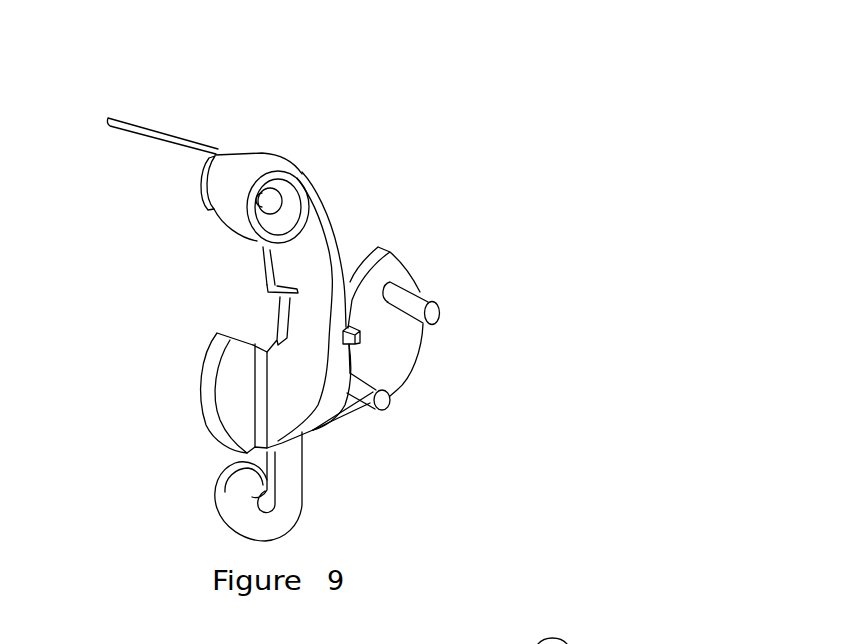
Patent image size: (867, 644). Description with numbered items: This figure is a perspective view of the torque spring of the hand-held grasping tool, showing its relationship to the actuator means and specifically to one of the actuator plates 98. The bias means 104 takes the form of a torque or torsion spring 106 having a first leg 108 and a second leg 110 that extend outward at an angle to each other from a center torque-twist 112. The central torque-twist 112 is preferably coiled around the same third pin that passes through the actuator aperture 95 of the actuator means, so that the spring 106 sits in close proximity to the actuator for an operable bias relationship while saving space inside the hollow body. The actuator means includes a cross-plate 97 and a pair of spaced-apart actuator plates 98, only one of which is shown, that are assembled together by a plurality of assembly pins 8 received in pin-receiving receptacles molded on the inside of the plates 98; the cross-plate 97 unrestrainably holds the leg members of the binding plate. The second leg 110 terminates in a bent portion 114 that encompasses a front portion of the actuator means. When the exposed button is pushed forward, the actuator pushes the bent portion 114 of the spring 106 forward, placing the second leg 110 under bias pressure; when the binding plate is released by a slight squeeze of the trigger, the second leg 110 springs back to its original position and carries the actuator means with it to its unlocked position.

The bias means 104 is at (350, 96).
The torque spring 106 is at (291, 168).
The aperture 95 is at (273, 200).
The first leg 108 is at (197, 147).
The center torque-twist 112 is at (209, 199).
The second leg 110 is at (262, 268).
The bent portion 114 is at (283, 295).
The cross-plate 97 is at (215, 472).
The actuator plates 98 is at (398, 348).
The assembly pins 8 is at (425, 300).